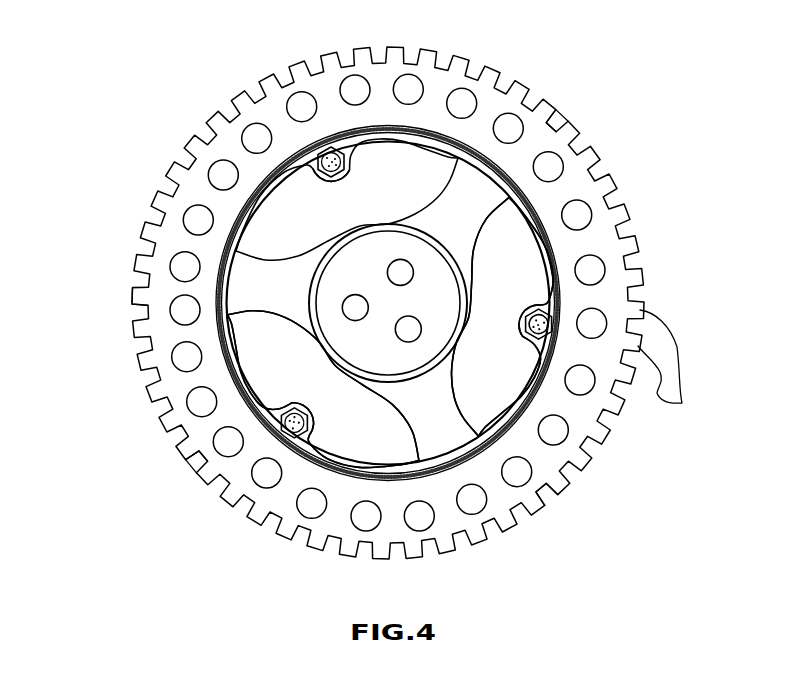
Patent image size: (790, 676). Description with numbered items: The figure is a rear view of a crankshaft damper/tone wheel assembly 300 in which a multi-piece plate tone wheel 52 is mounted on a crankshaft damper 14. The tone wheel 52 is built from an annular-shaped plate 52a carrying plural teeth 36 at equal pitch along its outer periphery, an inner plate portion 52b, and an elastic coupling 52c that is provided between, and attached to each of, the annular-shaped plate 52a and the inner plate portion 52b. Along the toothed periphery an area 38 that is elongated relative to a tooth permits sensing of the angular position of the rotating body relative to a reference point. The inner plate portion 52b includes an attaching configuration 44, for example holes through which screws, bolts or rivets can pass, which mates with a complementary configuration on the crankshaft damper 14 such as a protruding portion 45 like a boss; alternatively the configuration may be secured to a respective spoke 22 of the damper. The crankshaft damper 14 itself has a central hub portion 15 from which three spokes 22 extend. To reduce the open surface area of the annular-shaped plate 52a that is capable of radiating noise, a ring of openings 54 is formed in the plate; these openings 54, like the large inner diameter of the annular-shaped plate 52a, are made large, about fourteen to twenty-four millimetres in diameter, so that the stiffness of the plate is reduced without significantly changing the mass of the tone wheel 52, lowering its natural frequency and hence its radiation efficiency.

The crankshaft damper/tone wheel assembly 300 is at (128, 138).
The crankshaft damper 14 is at (151, 421).
The tone wheel 52 is at (134, 317).
The annular-shaped plate 52a is at (554, 127).
The inner plate portion 52b is at (250, 380).
The elastic coupling 52c is at (535, 210).
The opening 54 is at (200, 462).
The elongated area 38 is at (547, 491).
The teeth 36 is at (678, 366).
The spokes 22 is at (428, 413).
The hub portion 15 is at (466, 329).
The attaching configuration 44 is at (347, 164).
The protruding portion 45 is at (328, 200).